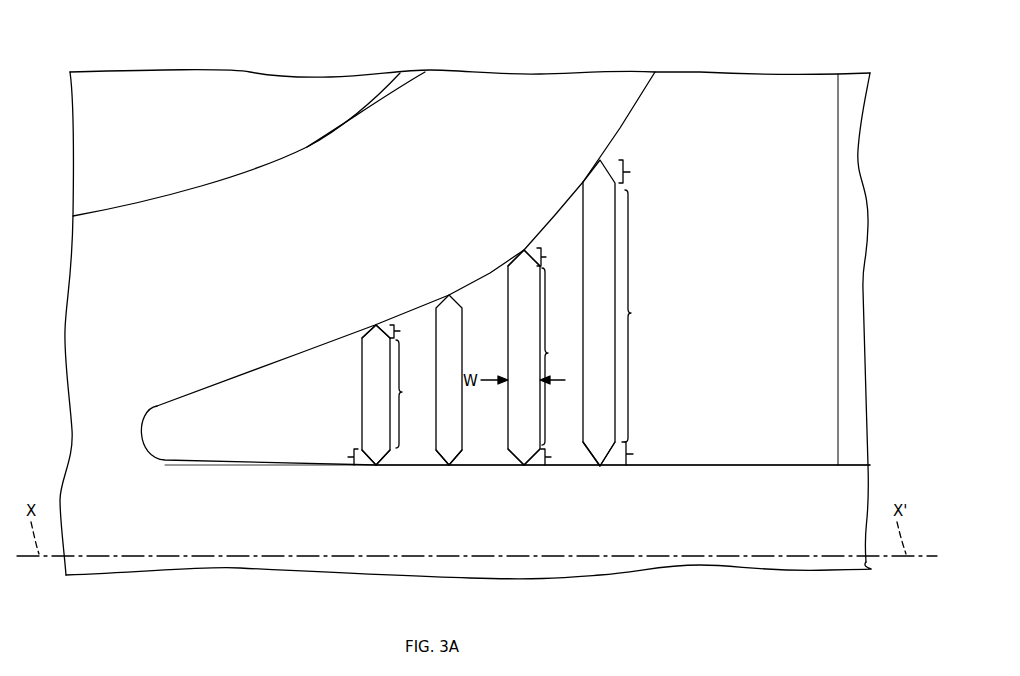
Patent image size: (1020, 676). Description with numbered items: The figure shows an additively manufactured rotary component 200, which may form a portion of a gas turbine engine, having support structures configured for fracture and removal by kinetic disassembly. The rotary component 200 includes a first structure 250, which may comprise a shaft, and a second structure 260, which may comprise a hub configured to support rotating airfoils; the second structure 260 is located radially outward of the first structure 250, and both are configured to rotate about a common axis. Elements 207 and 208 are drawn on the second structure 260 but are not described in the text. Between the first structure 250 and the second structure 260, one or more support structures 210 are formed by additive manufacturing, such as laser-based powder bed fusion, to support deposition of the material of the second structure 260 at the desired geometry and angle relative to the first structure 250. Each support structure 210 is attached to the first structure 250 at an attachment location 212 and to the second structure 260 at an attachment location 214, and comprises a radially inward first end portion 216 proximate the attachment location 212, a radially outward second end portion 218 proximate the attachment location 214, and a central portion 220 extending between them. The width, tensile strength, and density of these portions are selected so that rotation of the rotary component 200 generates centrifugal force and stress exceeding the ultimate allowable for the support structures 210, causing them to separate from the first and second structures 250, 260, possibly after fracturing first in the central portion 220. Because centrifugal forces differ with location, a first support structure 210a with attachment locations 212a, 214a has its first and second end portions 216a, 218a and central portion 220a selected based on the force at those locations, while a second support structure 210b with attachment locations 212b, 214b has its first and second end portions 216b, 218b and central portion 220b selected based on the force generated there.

The rotary component 200 is at (182, 88).
The pressure side surface 207 is at (225, 461).
The leading edge surface 208 is at (268, 367).
The support structure 210 is at (584, 238).
The first support structure 210a is at (362, 374).
The second support structure 210b is at (508, 287).
The attachment location 212 is at (449, 465).
The attachment location 212a is at (376, 465).
The attachment location 212b is at (523, 465).
The attachment location 214 is at (449, 296).
The attachment location 214a is at (376, 325).
The attachment location 214b is at (516, 250).
The first end portion 216 is at (643, 454).
The first end portion 216a is at (336, 454).
The first end portion 216b is at (566, 457).
The second end portion 218 is at (640, 172).
The second end portion 218a is at (415, 334).
The second end portion 218b is at (561, 257).
The central portion 220 is at (648, 316).
The central portion 220a is at (419, 394).
The central portion 220b is at (565, 356).
The first structure 250 is at (699, 527).
The second structure 260 is at (385, 226).